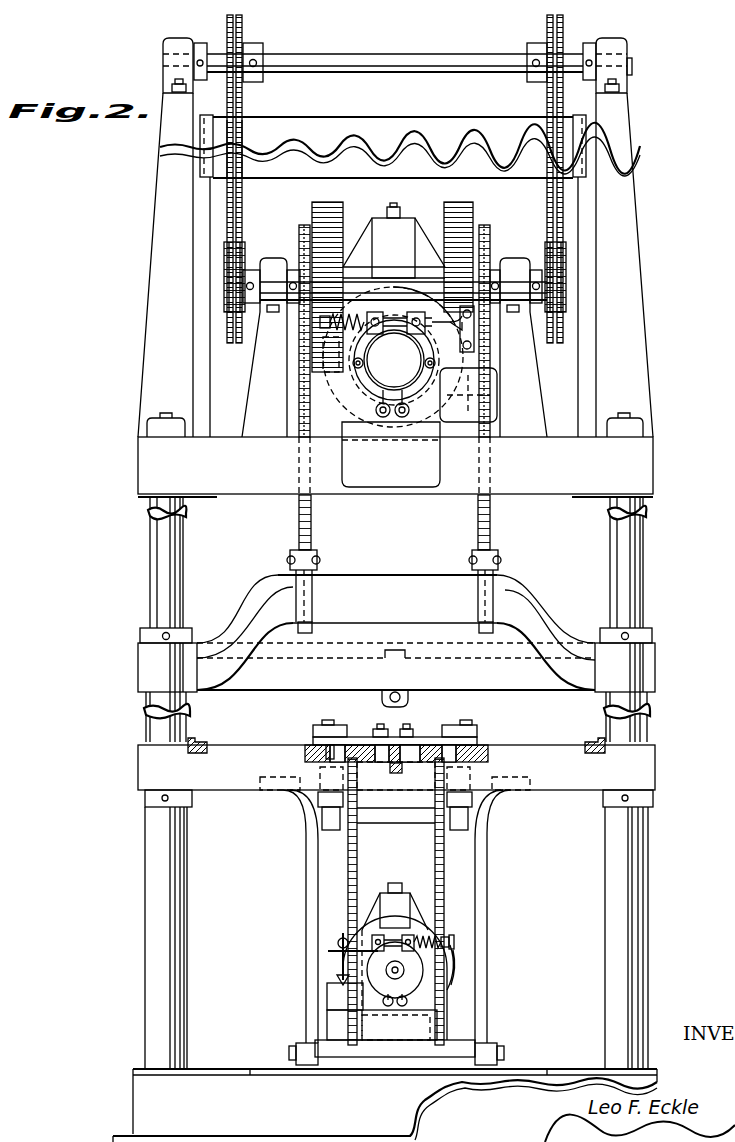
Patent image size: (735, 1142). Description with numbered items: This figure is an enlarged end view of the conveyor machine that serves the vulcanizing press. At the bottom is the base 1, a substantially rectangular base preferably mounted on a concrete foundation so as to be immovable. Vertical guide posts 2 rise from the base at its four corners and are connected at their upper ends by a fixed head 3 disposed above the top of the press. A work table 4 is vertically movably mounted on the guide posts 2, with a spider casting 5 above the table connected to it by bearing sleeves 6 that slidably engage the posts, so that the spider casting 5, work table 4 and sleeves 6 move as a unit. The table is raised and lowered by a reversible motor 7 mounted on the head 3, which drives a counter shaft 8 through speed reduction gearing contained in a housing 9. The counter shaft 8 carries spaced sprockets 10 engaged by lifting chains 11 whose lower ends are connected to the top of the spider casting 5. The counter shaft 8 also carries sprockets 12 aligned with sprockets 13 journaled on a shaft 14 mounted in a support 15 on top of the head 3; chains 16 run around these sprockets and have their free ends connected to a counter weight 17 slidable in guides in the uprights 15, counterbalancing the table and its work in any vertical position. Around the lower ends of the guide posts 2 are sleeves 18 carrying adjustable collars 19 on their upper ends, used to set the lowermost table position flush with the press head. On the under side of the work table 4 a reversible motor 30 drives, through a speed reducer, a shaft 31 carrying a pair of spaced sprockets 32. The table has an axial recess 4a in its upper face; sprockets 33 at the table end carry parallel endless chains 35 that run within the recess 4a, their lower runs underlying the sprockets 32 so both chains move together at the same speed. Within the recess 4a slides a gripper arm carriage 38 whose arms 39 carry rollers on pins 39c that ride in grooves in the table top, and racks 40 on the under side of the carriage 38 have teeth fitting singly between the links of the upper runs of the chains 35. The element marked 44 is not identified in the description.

The base 1 is at (135, 1094).
The vertical guide posts 2 is at (162, 575).
The fixed head 3 is at (148, 460).
The work table 4 is at (213, 785).
The recess 4a is at (340, 732).
The spider casting 5 is at (378, 576).
The bearing sleeves 6 is at (186, 722).
The motor 7 is at (491, 402).
The counter shaft 8 is at (566, 279).
The housing 9 is at (379, 225).
The sprockets 10 is at (297, 233).
The lifting chains 11 is at (312, 533).
The sprockets 12 is at (228, 318).
The sprockets 13 is at (242, 36).
The shaft 14 is at (372, 49).
The support 15 is at (170, 205).
The chains 16 is at (242, 103).
The counter weight 17 is at (372, 115).
The sleeves 18 is at (182, 950).
The adjustable collars 19 is at (143, 798).
The reversible motor 30 is at (453, 982).
The shaft 31 is at (457, 943).
The sprockets 32 is at (343, 922).
The sprockets 33 is at (320, 767).
The endless chains 35 is at (432, 855).
The gripper arm carriage 38 is at (420, 737).
The arms 39 is at (378, 731).
The pins 39c is at (318, 732).
The racks 40 is at (396, 772).
The bolt 44 is at (322, 750).